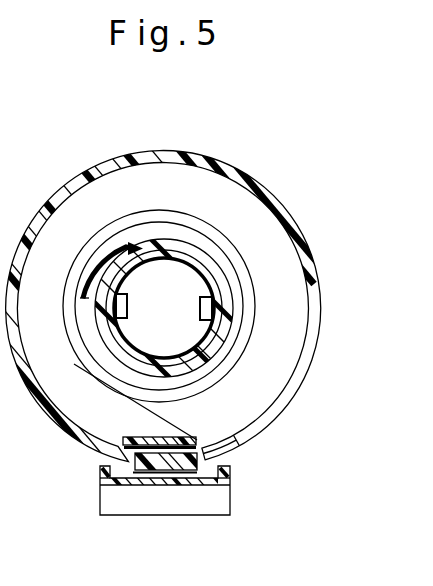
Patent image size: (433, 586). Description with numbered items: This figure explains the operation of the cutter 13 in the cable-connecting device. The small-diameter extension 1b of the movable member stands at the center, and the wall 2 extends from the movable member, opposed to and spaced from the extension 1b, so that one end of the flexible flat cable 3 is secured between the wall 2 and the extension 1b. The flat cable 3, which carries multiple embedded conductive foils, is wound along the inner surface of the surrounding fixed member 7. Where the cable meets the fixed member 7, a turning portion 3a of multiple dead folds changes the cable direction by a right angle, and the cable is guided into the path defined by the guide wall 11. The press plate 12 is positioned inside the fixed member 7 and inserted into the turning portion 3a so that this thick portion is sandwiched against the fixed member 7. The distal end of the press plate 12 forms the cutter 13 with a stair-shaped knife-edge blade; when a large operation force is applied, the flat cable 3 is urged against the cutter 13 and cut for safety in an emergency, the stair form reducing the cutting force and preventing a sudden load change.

The small-diameter extension 1b is at (204, 270).
The wall 2 is at (95, 268).
The flexible flat cable 3 is at (76, 366).
The turning portion 3a is at (240, 446).
The fixed member 7 is at (320, 305).
The guide wall 11 is at (198, 503).
The press plate 12 is at (128, 437).
The cutter 13 is at (198, 444).